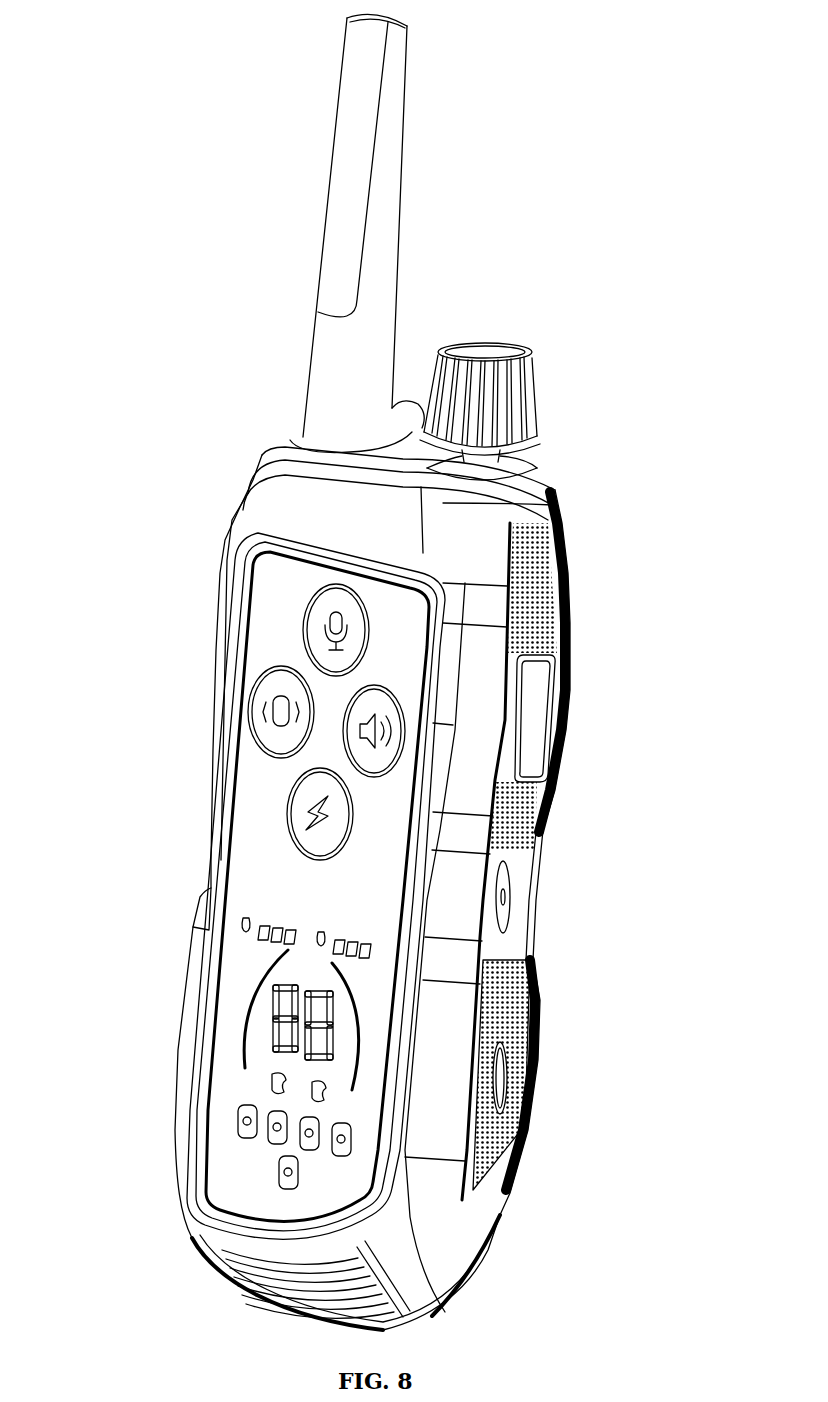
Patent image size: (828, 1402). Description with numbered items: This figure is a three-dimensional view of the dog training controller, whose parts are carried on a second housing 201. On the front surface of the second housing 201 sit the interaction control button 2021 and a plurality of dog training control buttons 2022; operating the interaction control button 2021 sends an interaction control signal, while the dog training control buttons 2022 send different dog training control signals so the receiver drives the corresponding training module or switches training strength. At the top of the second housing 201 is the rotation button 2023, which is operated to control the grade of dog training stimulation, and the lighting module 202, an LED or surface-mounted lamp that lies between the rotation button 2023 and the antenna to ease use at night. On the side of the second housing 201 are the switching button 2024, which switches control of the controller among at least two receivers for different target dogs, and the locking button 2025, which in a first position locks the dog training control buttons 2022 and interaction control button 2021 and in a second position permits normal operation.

The second housing 201 is at (262, 583).
The lighting module 202 is at (408, 410).
The interaction control button 2021 is at (305, 651).
The dog training control button 2022 is at (298, 817).
The rotation button 2023 is at (508, 404).
The switching button 2024 is at (533, 718).
The locking button 2025 is at (517, 1057).